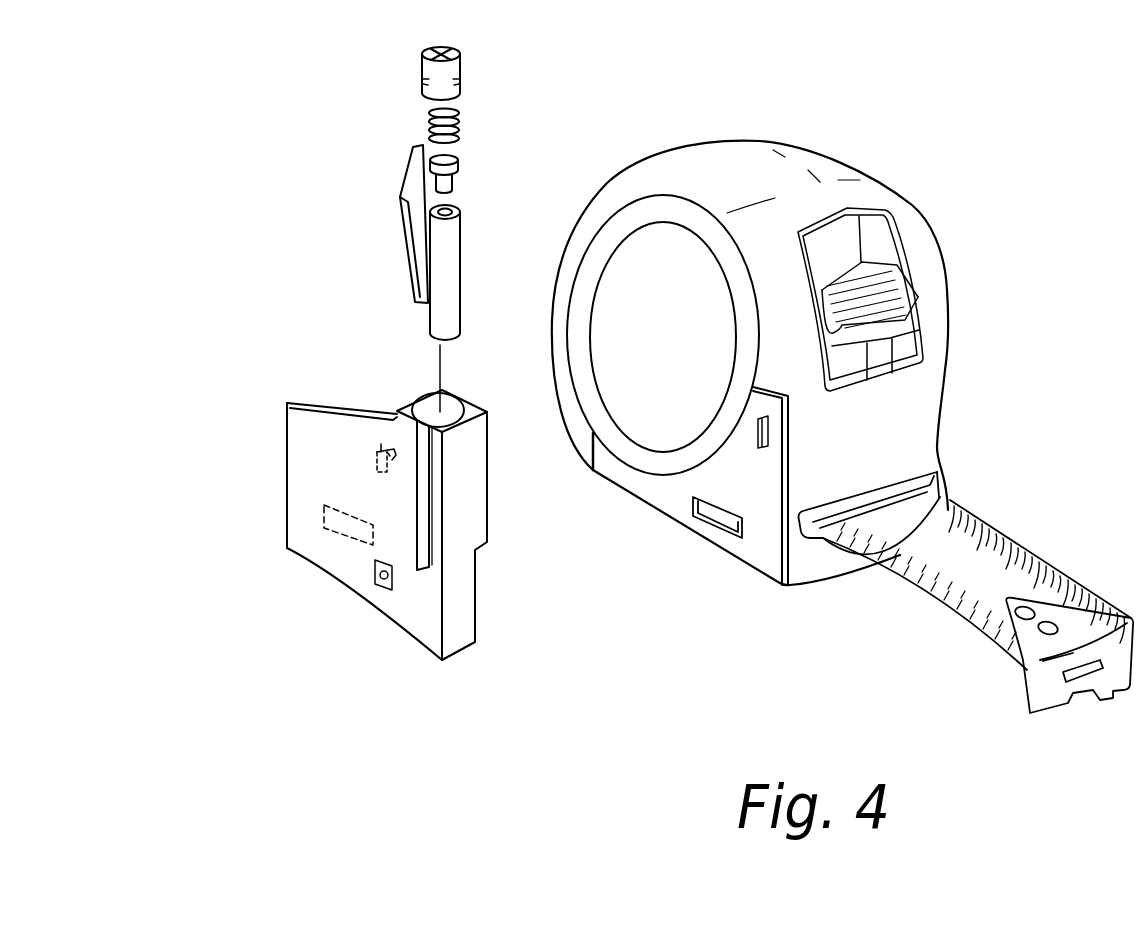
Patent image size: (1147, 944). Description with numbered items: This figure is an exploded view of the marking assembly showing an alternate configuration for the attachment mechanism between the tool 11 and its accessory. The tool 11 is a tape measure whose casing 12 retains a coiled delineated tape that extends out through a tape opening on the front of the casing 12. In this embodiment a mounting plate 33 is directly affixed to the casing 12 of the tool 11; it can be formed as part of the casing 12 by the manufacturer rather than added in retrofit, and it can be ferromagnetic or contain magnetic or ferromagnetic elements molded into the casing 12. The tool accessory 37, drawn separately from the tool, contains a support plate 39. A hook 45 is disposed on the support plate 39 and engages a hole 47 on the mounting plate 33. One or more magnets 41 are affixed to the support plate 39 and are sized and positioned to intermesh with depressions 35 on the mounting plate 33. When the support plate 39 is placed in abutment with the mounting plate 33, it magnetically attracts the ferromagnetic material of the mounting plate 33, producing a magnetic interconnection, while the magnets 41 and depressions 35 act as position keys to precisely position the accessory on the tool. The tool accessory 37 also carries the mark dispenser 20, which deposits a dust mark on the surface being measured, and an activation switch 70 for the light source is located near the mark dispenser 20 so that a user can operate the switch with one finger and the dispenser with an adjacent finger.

The tool 11 is at (958, 240).
The casing 12 is at (913, 430).
The mark dispenser 20 is at (472, 72).
The mounting plate 33 is at (758, 553).
The depressions 35 is at (722, 515).
The tool accessory 37 is at (400, 602).
The support plate 39 is at (333, 475).
The magnets 41 is at (343, 527).
The hook 45 is at (387, 445).
The hole 47 is at (762, 432).
The activation switch 70 is at (375, 578).